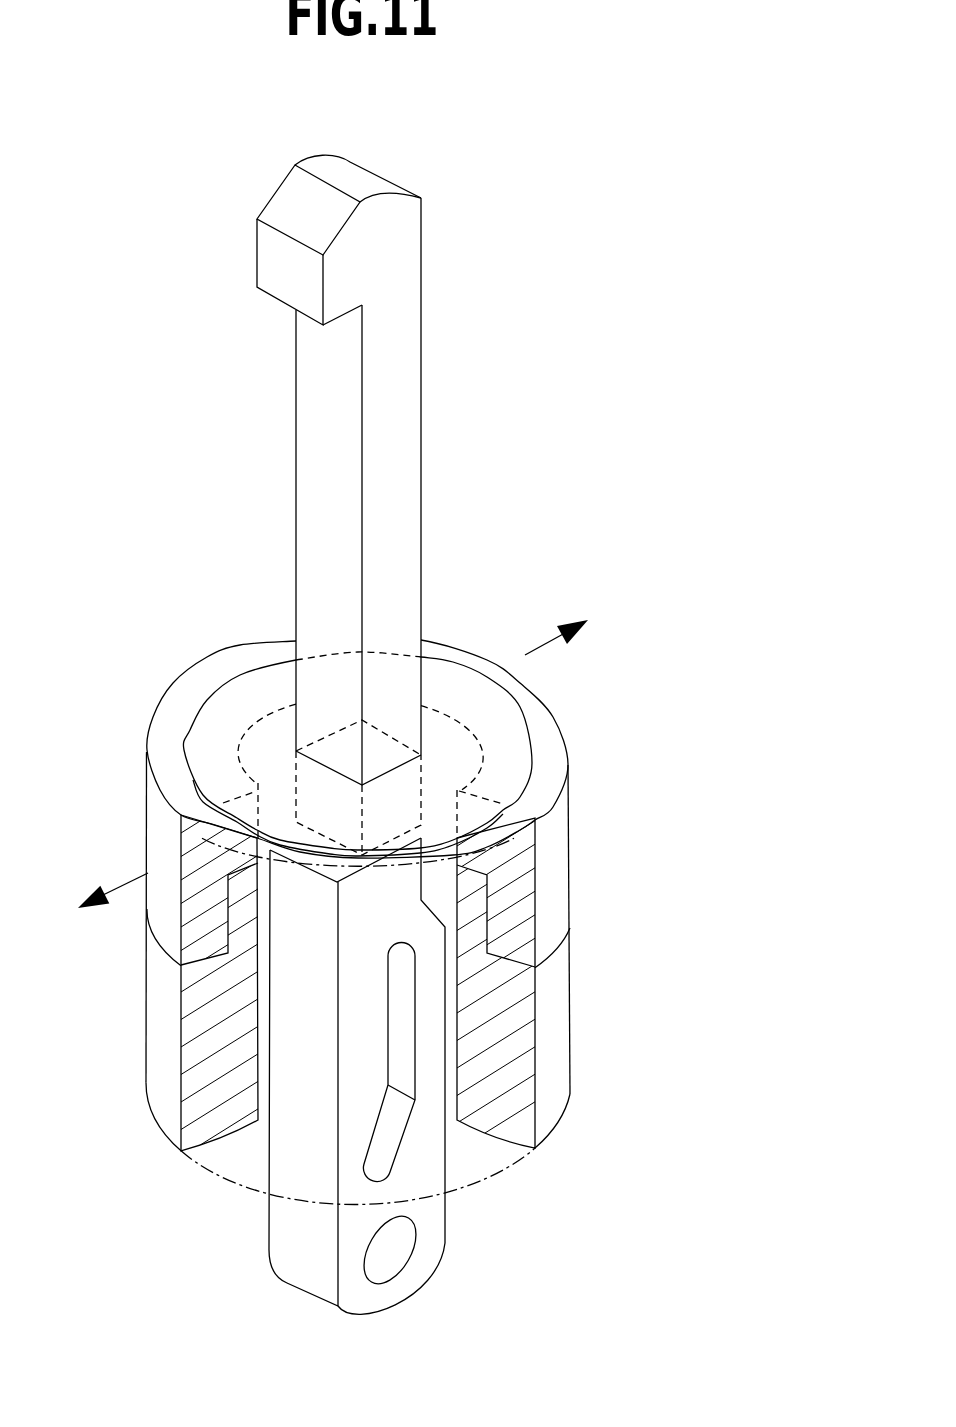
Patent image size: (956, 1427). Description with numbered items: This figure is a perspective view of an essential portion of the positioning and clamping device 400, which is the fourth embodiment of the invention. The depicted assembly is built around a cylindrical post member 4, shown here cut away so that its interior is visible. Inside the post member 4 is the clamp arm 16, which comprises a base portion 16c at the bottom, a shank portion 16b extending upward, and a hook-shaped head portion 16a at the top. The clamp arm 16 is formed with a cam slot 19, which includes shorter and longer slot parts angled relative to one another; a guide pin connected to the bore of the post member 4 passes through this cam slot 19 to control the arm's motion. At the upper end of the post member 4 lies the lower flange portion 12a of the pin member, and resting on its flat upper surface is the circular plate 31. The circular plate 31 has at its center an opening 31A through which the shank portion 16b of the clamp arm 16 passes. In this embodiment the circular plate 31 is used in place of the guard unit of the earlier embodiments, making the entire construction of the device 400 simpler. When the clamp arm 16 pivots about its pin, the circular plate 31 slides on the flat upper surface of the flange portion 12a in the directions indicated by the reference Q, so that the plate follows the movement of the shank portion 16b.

The positioning and clamping device 400 is at (578, 158).
The cylindrical post member 4 is at (125, 1054).
The lower flange portion 12a is at (553, 873).
The circular plate 31 is at (503, 717).
The opening 31A is at (333, 763).
The clamp arm 16 is at (250, 1163).
The hook-shaped head portion 16a is at (287, 201).
The shank portion 16b is at (387, 458).
The base portion 16c is at (427, 1068).
The cam slot 19 is at (403, 1013).